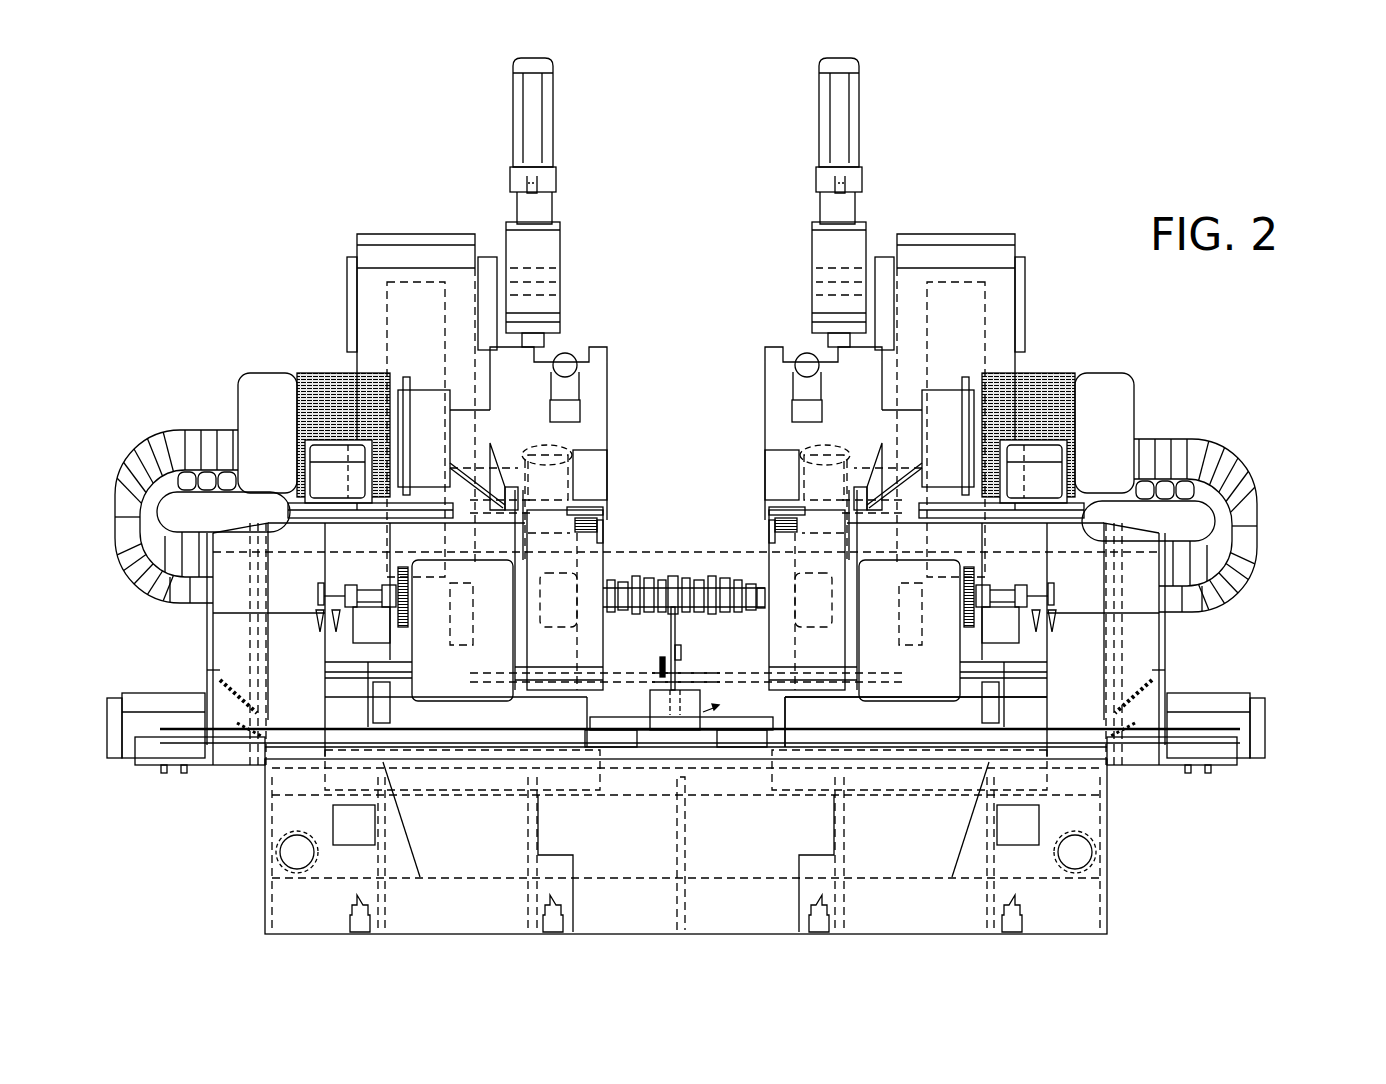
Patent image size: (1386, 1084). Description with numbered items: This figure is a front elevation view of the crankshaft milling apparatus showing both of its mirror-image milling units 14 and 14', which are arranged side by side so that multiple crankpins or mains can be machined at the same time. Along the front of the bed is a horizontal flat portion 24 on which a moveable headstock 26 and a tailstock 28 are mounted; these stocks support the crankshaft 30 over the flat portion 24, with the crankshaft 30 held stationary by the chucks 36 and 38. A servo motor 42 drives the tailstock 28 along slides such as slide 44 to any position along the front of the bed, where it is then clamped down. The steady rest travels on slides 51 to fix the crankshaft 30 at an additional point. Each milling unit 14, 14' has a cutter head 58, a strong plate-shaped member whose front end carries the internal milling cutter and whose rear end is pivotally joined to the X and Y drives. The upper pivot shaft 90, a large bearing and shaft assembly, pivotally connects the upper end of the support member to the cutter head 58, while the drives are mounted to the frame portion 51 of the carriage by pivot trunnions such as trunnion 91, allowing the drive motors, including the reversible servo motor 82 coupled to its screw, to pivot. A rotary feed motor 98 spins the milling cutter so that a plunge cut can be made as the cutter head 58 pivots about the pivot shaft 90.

The milling unit 14 is at (550, 436).
The milling unit 14' is at (813, 436).
The horizontal flat portion 24 is at (1075, 771).
The headstock 26 is at (477, 688).
The tailstock 28 is at (943, 693).
The crankshaft 30 is at (677, 575).
The chuck 36 is at (588, 622).
The chuck 38 is at (777, 625).
The servo motor 42 is at (1278, 732).
The slide 44 is at (562, 742).
The vertical portion 51 is at (368, 270).
The cutter head 58 is at (240, 362).
The reversible servo motor 82 is at (553, 105).
The pivot shaft 90 is at (676, 681).
The pivot trunnion 91 is at (504, 256).
The rotary feed motor 98 is at (1100, 386).